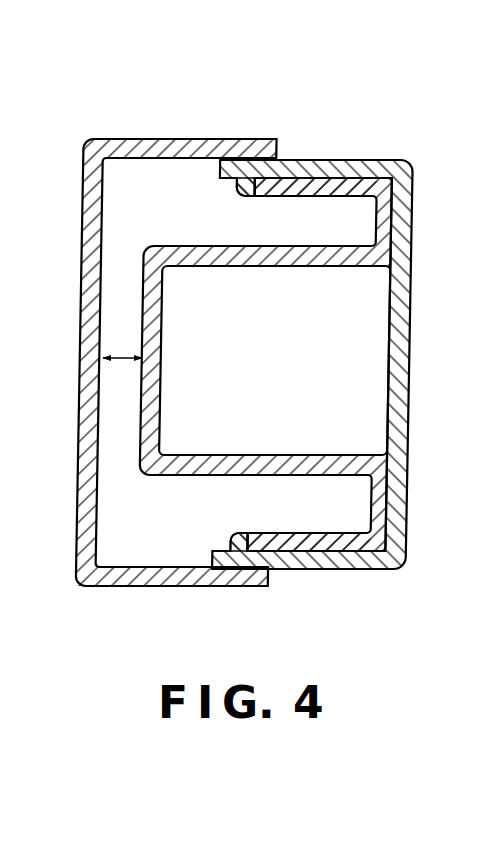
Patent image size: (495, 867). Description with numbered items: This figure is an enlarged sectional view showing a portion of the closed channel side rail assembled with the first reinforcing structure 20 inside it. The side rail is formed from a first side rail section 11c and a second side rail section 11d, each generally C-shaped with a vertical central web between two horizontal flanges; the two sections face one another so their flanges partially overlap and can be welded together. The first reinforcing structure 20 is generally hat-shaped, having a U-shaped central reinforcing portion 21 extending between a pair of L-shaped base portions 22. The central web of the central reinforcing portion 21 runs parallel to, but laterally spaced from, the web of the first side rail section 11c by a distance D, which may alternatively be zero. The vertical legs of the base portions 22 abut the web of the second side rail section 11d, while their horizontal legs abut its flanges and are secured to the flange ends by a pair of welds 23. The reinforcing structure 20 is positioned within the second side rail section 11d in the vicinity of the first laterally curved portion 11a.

The first reinforcing structure 20 is at (126, 186).
The first laterally curved portion 11a is at (328, 111).
The first side rail section 11c is at (164, 143).
The second side rail section 11d is at (318, 563).
The central reinforcing portion 21 is at (152, 320).
The base portions 22 is at (311, 188).
The welds 23 is at (237, 192).
The distance D is at (113, 355).